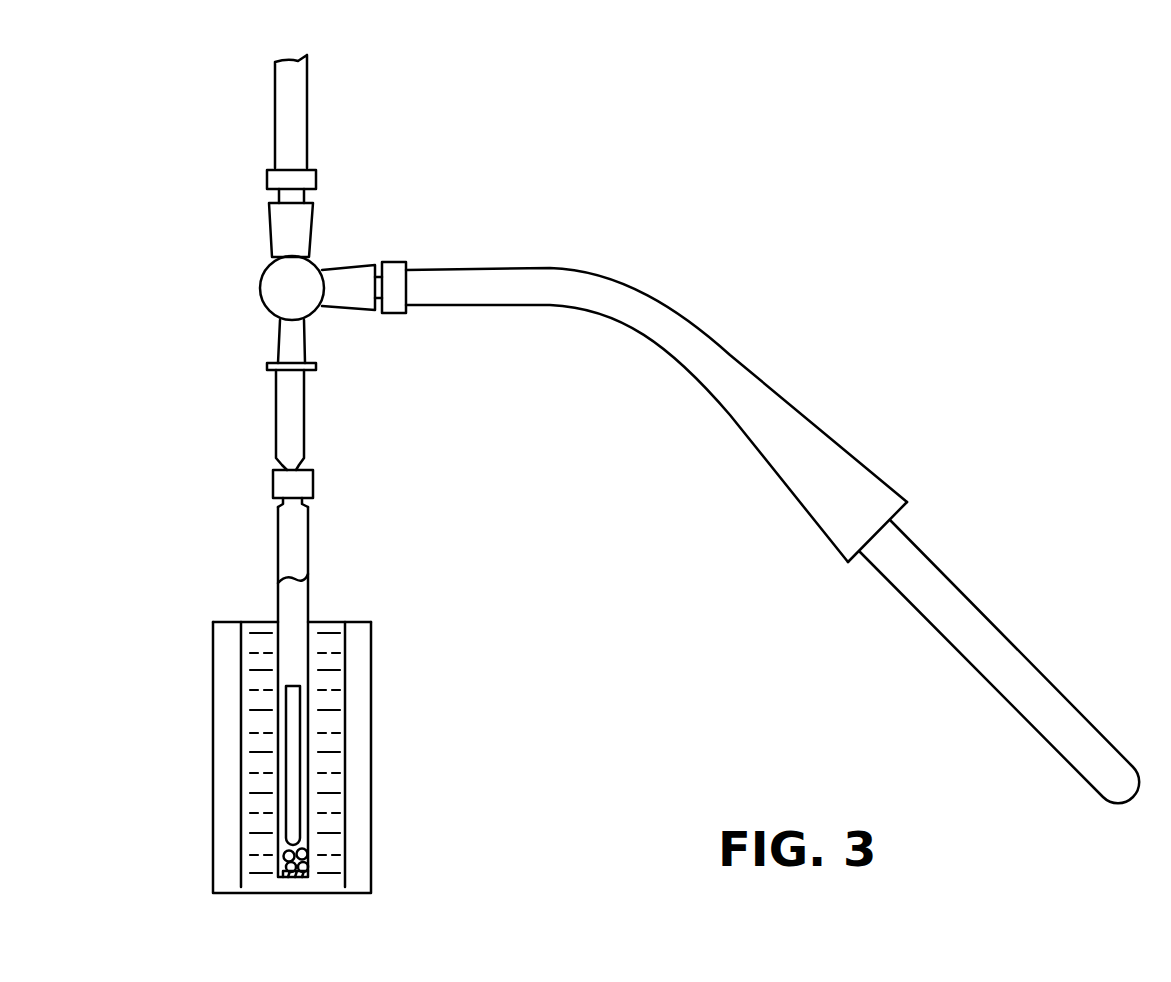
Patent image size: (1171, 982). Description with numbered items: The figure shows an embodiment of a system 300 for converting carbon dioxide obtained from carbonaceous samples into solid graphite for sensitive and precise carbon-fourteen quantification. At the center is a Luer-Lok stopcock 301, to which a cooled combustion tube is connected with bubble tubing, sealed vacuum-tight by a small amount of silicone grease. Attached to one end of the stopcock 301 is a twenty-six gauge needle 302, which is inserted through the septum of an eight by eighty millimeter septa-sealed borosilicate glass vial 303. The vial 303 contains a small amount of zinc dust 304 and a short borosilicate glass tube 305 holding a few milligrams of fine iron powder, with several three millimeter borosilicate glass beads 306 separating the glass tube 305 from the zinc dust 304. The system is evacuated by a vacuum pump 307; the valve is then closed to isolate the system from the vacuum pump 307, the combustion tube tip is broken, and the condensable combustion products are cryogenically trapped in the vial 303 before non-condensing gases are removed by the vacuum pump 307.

The system 300 is at (606, 144).
The Luer-Lok stopcock 301 is at (260, 296).
The 26 gauge needle 302 is at (276, 430).
The septa-sealed borosilicate glass vial 303 is at (278, 558).
The zinc dust 304 is at (312, 876).
The borosilicate glass tube 305 is at (296, 772).
The borosilicate glass beads 306 is at (308, 855).
The vacuum pump 307 is at (307, 120).